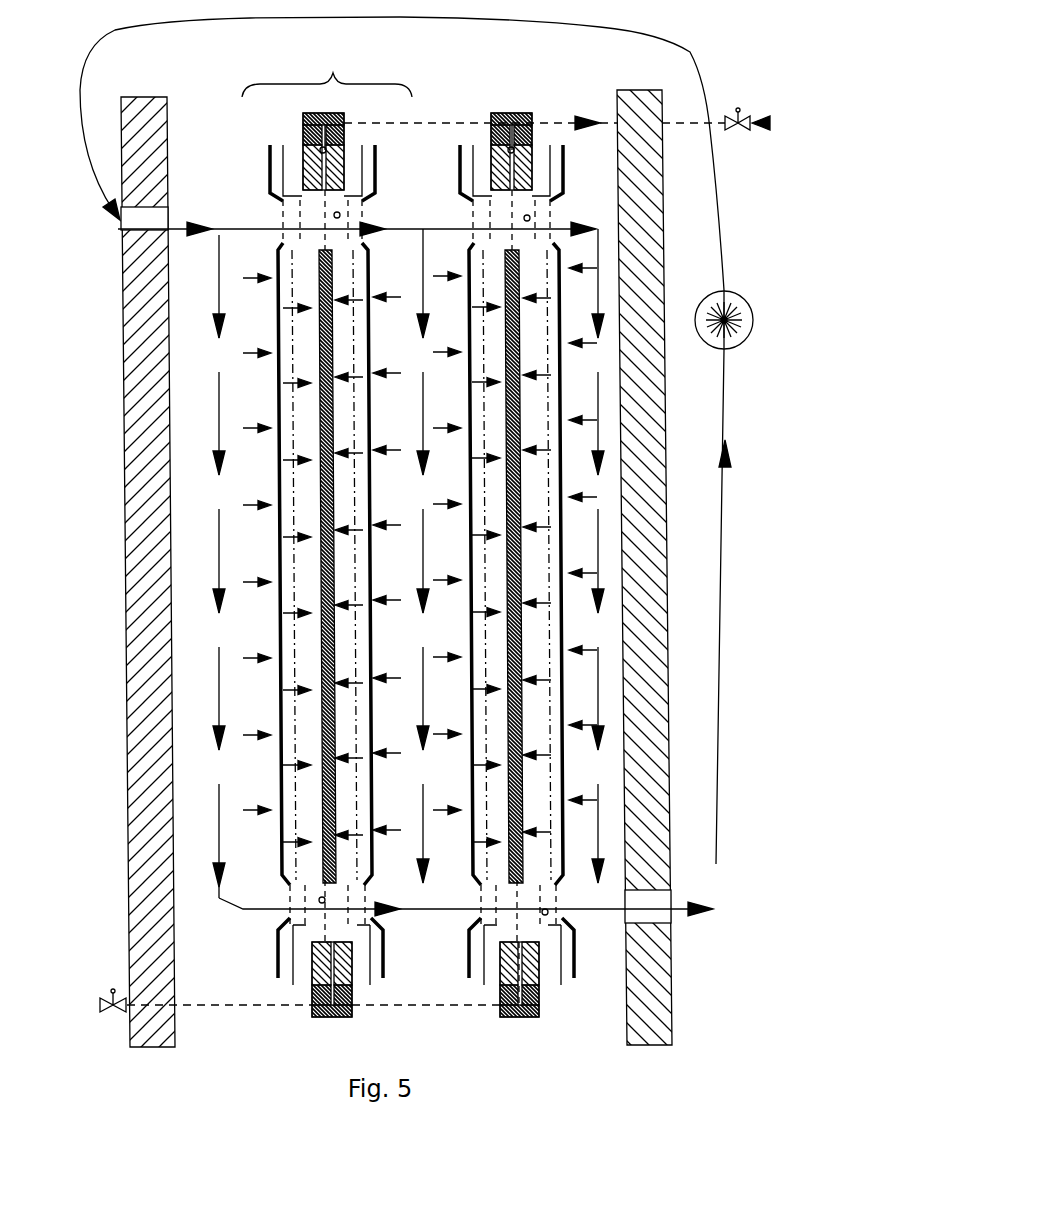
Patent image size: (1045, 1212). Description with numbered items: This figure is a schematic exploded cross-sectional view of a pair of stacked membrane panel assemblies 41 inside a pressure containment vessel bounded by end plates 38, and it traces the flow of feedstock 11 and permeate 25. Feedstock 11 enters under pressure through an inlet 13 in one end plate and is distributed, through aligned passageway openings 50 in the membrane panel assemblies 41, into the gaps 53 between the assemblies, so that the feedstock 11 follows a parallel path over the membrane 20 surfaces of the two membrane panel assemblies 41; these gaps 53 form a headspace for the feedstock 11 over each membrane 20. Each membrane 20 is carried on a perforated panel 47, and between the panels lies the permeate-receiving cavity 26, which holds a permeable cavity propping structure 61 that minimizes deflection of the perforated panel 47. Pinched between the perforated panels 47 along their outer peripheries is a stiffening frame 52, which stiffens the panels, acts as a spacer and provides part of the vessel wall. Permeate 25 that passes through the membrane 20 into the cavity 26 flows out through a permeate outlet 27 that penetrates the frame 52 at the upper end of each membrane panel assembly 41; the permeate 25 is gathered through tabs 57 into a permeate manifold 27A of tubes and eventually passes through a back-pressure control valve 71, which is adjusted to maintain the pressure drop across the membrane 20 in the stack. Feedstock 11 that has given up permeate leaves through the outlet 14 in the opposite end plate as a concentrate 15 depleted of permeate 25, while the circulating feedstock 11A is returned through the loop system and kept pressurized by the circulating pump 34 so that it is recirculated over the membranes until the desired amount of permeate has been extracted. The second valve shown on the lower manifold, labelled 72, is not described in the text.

The feedstock 11 is at (138, 231).
The circulating feedstock 11A is at (731, 462).
The inlet 13 is at (168, 218).
The outlet 14 is at (676, 899).
The concentrate 15 is at (697, 916).
The membrane 20 is at (377, 152).
The permeate 25 is at (585, 118).
The permeate-receiving cavity 26 is at (311, 273).
The permeate outlet 27 is at (330, 113).
The permeate manifold 27A is at (470, 123).
The circulating pump 34 is at (736, 291).
The end plates 38 is at (123, 424).
The membrane panel assembly 41 is at (327, 70).
The perforated panel 47 is at (281, 146).
The passageway opening 50 is at (340, 214).
The stiffening frame 52 is at (520, 963).
The gaps 53 is at (443, 677).
The tabs 57 is at (314, 113).
The permeable cavity propping structure 61 is at (323, 352).
The back-pressure control valve 71 is at (726, 131).
The valve 72 is at (113, 1013).